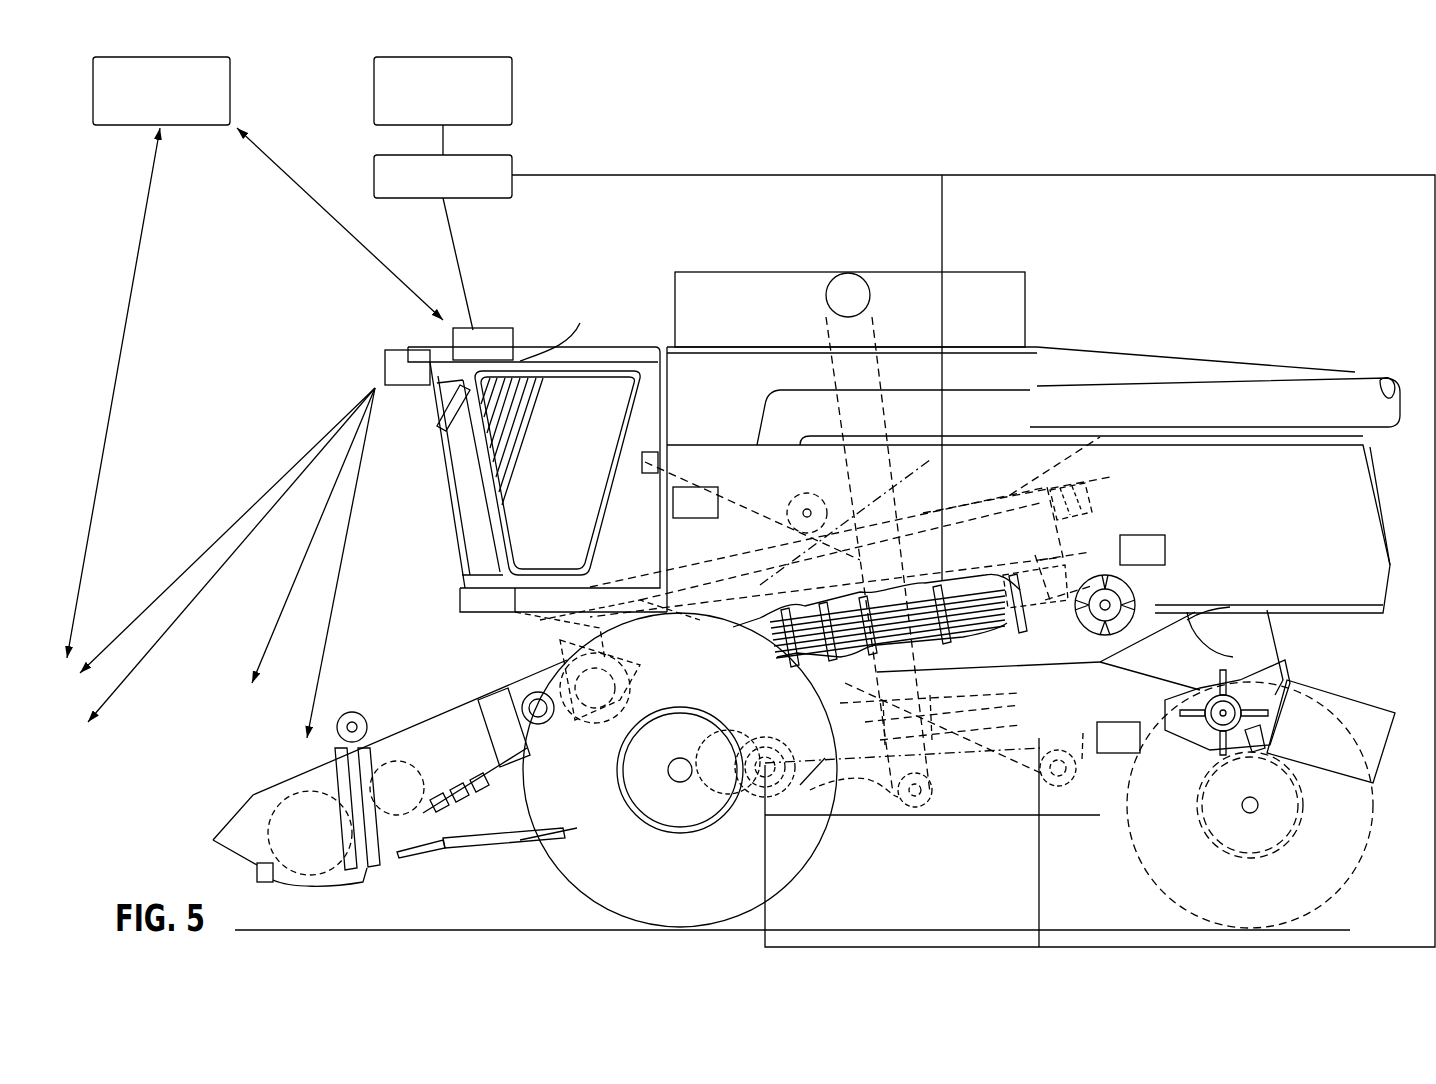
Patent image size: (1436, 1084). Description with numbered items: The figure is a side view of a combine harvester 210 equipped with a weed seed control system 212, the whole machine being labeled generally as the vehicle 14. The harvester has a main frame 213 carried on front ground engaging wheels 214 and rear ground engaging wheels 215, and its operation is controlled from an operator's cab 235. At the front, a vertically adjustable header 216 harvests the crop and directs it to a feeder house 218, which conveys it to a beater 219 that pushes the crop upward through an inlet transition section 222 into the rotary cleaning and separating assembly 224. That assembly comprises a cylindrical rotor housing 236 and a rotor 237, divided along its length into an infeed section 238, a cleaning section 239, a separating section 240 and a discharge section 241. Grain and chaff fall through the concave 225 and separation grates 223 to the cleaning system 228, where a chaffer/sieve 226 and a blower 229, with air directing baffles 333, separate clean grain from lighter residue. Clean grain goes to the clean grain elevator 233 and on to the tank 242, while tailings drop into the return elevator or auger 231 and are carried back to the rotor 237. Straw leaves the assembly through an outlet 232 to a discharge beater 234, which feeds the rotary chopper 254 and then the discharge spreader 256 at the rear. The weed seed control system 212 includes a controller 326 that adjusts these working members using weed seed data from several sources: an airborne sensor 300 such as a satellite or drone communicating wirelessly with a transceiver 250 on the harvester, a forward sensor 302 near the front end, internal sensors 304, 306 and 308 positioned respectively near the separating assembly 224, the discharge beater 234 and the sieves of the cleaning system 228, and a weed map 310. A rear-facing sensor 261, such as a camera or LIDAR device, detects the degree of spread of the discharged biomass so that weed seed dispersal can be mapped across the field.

The agricultural vehicle body 14 is at (1028, 524).
The harvester 210 is at (1303, 267).
The weed seed control system 212 is at (518, 172).
The main frame 213 is at (1383, 522).
The front ground engaging wheels 214 is at (545, 680).
The rear ground engaging wheels 215 is at (1367, 847).
The header 216 is at (268, 770).
The feeder house 218 is at (450, 725).
The beater 219 is at (563, 648).
The inlet transition section 222 is at (598, 628).
The separation grates 223 is at (957, 627).
The rotary cleaning and separating assembly 224 is at (750, 573).
The concave 225 is at (761, 759).
The chaffer/sieve 226 is at (1007, 693).
The cleaning system 228 is at (1083, 733).
The blower 229 is at (752, 808).
The return elevator or auger 231 is at (1060, 790).
The outlet 232 is at (1080, 540).
The clean grain elevator 233 is at (893, 422).
The discharge beater 234 is at (1133, 595).
The operator's cab 235 is at (537, 345).
The rotor housing 236 is at (1018, 488).
The rotor 237 is at (1040, 504).
The infeed section 238 is at (628, 570).
The cleaning section 239 is at (770, 538).
The separating section 240 is at (930, 513).
The discharge section 241 is at (1062, 470).
The tank 242 is at (1037, 368).
The transceiver 250 is at (458, 328).
The rotary chopper 254 is at (1228, 660).
The discharge spreader 256 is at (1350, 700).
The sensor 261 is at (1385, 626).
The airborne sensor 300 is at (232, 98).
The forward sensor 302 is at (388, 352).
The internal sensor 304 is at (700, 487).
The internal sensor 306 is at (1165, 548).
The internal sensor 308 is at (1125, 753).
The weed map 310 is at (374, 93).
The controller 326 is at (515, 195).
The air directing baffles 333 is at (817, 778).